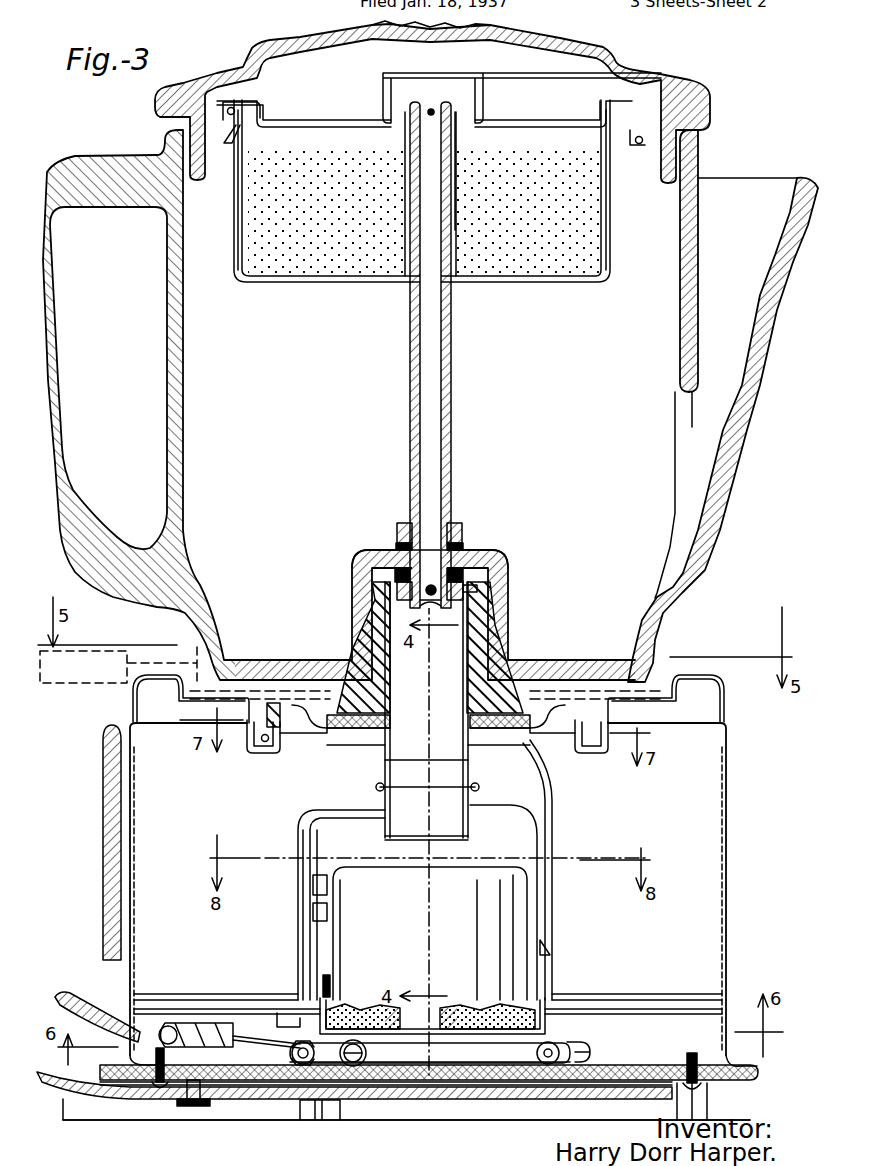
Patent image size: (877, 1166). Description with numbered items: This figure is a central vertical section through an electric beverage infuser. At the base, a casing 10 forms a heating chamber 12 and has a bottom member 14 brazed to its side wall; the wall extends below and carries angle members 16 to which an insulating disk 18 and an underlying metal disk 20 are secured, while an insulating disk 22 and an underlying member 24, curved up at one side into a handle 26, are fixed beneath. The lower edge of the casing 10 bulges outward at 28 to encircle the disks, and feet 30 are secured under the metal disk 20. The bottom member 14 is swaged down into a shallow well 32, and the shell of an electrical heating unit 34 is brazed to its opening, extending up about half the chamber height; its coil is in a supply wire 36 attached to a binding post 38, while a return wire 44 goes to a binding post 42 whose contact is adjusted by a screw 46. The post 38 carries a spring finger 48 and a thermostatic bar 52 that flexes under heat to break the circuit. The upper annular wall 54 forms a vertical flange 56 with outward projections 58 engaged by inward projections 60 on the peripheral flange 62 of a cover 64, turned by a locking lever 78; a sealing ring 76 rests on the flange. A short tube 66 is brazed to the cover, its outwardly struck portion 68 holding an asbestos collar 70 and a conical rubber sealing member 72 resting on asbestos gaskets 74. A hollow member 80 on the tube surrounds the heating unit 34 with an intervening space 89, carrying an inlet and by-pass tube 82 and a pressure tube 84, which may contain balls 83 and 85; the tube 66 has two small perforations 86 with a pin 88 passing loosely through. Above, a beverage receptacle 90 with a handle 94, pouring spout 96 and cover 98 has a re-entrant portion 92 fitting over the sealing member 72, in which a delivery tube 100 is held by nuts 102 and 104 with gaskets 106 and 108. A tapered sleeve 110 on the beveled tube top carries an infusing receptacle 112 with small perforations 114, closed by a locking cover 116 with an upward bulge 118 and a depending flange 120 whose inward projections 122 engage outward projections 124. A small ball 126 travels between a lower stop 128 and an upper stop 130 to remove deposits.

The casing 10 is at (728, 776).
The heating chamber 12 is at (690, 818).
The bottom member 14 is at (632, 1010).
The angle members 16 is at (724, 1046).
The insulating disk 18 is at (662, 1066).
The metal disk 20 is at (737, 1086).
The insulating disk 22 is at (220, 1092).
The underlying member 24 is at (467, 1102).
The handle 26 is at (70, 1088).
The outward bulge 28 is at (758, 1076).
The feet 30 is at (322, 1122).
The shallow well 32 is at (282, 1012).
The electrical heating unit 34 is at (505, 922).
The supply wire 36 is at (250, 1035).
The binding post 38 is at (580, 1060).
The binding post 42 is at (280, 1088).
The return wire 44 is at (245, 1042).
The screw 46 is at (357, 1066).
The spring finger 48 is at (385, 1064).
The thermostatic bar 52 is at (430, 1053).
The upper annular wall 54 is at (716, 703).
The vertical flange 56 is at (578, 750).
The outward projections 58 is at (283, 730).
The inward projections 60 is at (268, 745).
The peripheral flange 62 is at (262, 728).
The cover 64 is at (316, 735).
The short tube 66 is at (385, 764).
The outwardly struck portion 68 is at (392, 684).
The asbestos collar 70 is at (470, 714).
The conical rubber sealing member 72 is at (368, 620).
The asbestos gaskets 74 is at (536, 718).
The sealing ring 76 is at (585, 700).
The locking lever 78 is at (140, 668).
The hollow member 80 is at (490, 805).
The inlet and by-pass tube 82 is at (300, 914).
The ball 83 is at (333, 985).
The pressure tube 84 is at (553, 810).
The ball 85 is at (551, 947).
The small perforations 86 is at (472, 786).
The pin 88 is at (413, 790).
The intervening space 89 is at (326, 906).
The beverage receptacle 90 is at (185, 450).
The re-entrant portion 92 is at (368, 556).
The handle 94 is at (80, 490).
The pouring spout 96 is at (752, 430).
The cover 98 is at (690, 77).
The delivery tube 100 is at (452, 402).
The nut 102 is at (398, 528).
The nut 104 is at (465, 588).
The gasket 106 is at (398, 546).
The gasket 108 is at (396, 577).
The tapered sleeve 110 is at (455, 152).
The infusing receptacle 112 is at (603, 283).
The small perforations 114 is at (612, 215).
The locking cover 116 is at (550, 125).
The upward bulge 118 is at (400, 73).
The depending flange 120 is at (643, 138).
The inward projections 122 is at (231, 133).
The outward projections 124 is at (240, 115).
The small ball 126 is at (432, 588).
The lower stop 128 is at (438, 608).
The upper stop 130 is at (432, 110).